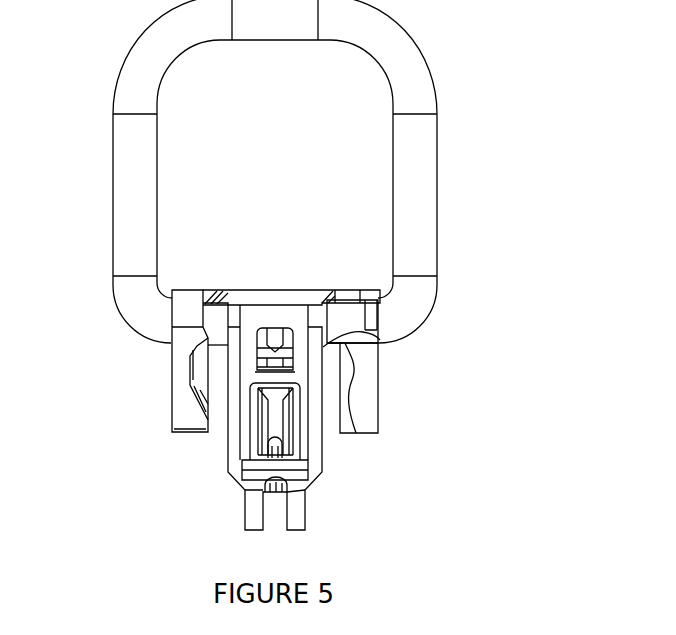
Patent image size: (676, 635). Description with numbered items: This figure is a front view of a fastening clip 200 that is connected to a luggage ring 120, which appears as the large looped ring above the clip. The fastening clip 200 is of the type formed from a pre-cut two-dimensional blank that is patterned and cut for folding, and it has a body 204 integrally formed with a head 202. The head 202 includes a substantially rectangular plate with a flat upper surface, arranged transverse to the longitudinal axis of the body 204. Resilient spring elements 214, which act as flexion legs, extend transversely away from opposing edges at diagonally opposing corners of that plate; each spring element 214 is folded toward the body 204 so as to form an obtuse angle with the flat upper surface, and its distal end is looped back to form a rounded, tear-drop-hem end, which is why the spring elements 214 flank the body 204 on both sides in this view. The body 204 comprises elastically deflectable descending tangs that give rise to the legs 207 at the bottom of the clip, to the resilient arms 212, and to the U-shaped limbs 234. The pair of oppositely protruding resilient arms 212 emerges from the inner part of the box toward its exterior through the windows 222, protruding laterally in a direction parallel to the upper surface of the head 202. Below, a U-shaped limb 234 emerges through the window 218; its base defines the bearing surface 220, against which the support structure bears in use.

The luggage ring 120 is at (415, 172).
The fastening clip 200 is at (435, 445).
The head 202 is at (275, 281).
The body 204 is at (212, 470).
The legs 207 is at (258, 528).
The resilient arms 212 is at (283, 363).
The resilient spring elements 214 is at (183, 347).
The window 218 is at (298, 402).
The bearing surface 220 is at (275, 403).
The windows 222 is at (297, 338).
The U-shaped limbs 234 is at (253, 438).